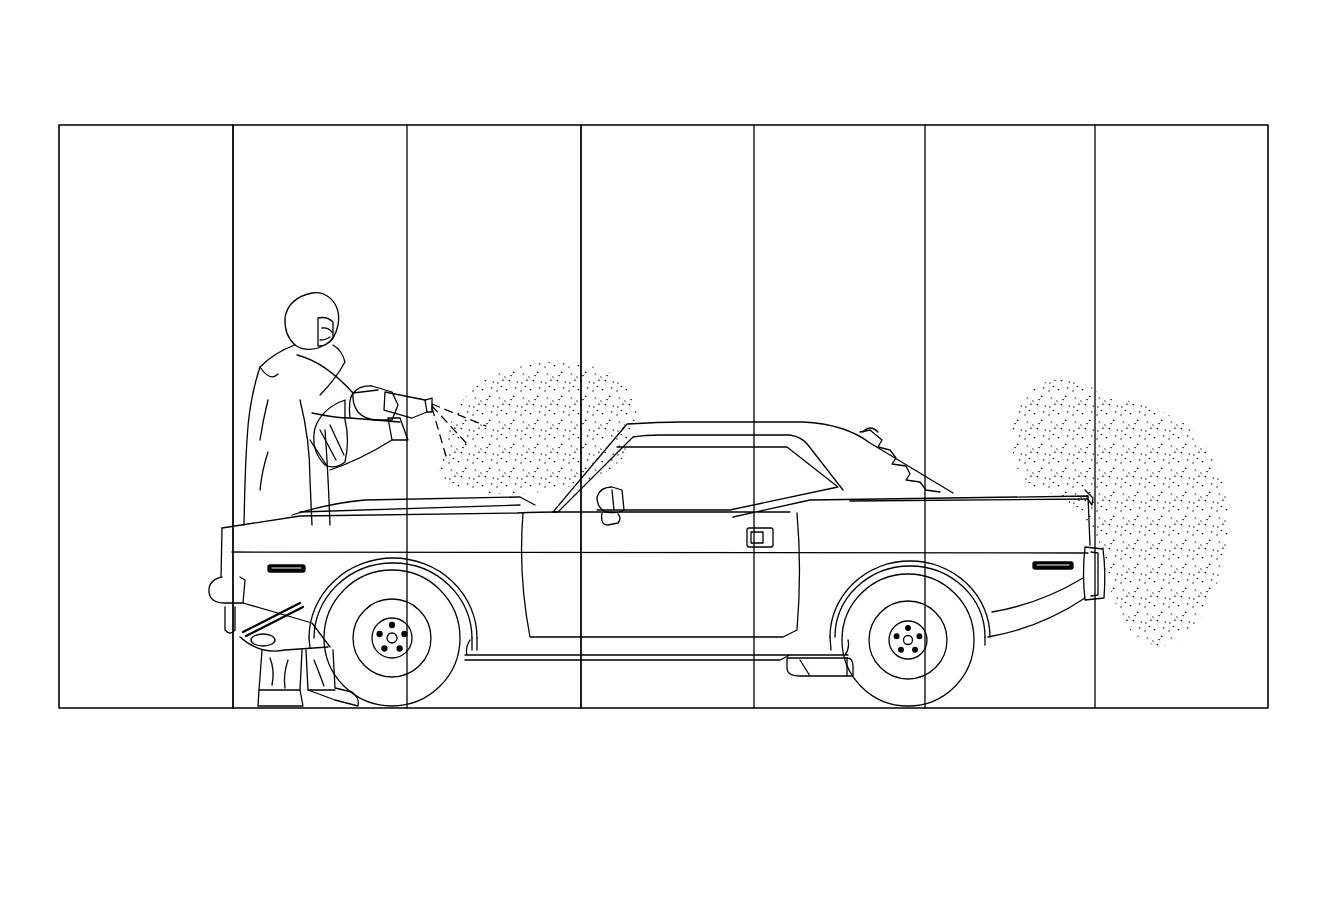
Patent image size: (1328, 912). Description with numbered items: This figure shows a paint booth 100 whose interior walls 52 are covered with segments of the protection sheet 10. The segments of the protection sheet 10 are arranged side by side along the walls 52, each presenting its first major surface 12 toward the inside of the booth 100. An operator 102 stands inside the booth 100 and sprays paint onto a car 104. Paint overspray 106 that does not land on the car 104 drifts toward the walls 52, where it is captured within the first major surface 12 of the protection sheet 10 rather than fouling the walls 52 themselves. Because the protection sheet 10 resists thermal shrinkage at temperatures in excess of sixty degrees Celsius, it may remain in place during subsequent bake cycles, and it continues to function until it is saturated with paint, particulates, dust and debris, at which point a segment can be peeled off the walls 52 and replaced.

The protection sheet 10 is at (251, 129).
The first major surface 12 is at (668, 416).
The walls 52 is at (1269, 148).
The paint booth 100 is at (1054, 68).
The operator 102 is at (305, 305).
The car 104 is at (826, 437).
The paint overspray 106 is at (518, 383).